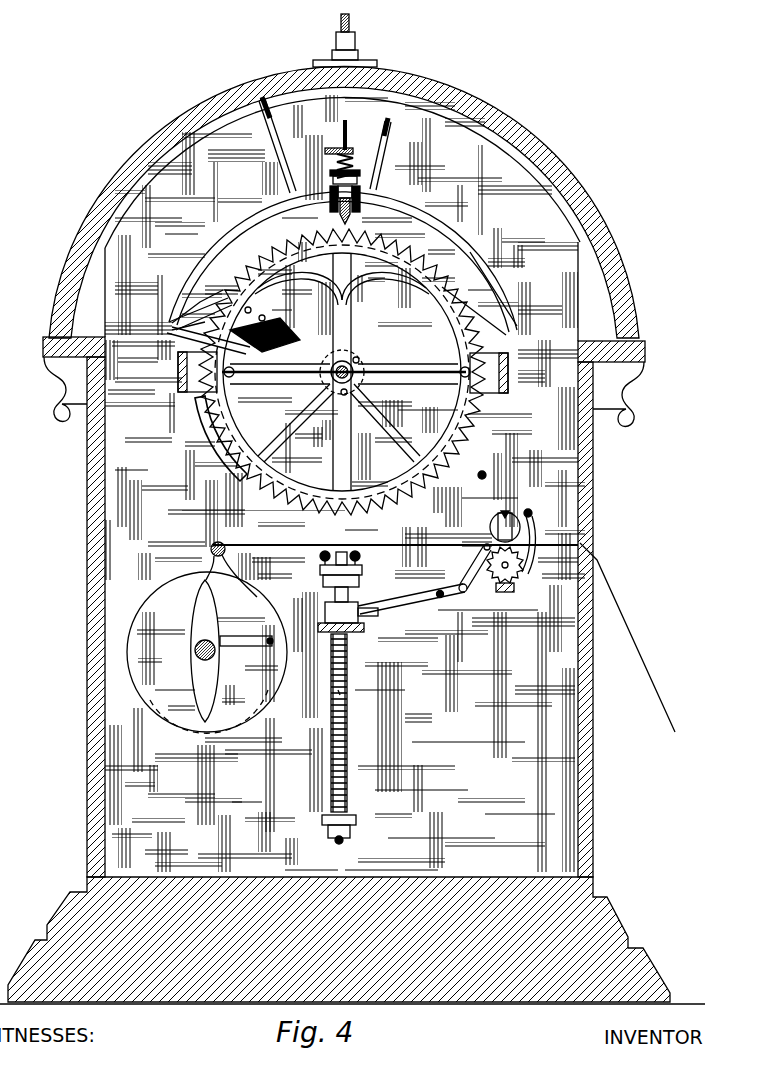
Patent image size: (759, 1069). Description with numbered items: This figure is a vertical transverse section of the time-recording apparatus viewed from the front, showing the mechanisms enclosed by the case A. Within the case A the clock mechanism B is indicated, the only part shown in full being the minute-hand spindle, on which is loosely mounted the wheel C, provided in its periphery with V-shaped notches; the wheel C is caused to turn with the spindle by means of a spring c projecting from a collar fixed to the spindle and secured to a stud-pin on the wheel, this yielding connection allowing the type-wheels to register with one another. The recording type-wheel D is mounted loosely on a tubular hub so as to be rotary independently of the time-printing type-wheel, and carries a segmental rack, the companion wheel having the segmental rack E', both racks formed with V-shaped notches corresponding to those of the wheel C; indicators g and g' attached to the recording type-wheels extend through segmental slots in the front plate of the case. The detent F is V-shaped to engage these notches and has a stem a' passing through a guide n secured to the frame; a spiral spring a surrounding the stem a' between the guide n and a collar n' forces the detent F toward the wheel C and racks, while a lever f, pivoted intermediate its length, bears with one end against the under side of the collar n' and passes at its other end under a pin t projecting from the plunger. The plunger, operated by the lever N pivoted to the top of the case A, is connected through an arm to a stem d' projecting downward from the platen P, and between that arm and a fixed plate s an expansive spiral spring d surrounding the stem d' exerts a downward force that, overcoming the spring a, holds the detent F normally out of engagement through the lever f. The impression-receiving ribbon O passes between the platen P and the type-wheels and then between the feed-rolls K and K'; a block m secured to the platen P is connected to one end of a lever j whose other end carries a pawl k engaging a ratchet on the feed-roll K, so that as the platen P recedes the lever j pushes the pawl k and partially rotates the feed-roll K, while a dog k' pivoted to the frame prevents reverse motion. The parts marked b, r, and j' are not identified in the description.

The case A is at (575, 210).
The lever N is at (350, 18).
The indicator g' is at (271, 145).
The indicator g is at (389, 154).
The stem a' is at (355, 134).
The guide n is at (333, 149).
The spiral spring a is at (352, 166).
The collar n' is at (336, 173).
The lever f is at (357, 182).
The detent F is at (342, 273).
The wheel C is at (342, 372).
The spring c is at (346, 369).
The hub b is at (342, 369).
The clock mechanism B is at (265, 319).
The segmental rack E' is at (197, 341).
The feed-roll K' is at (506, 395).
The recording type-wheel D is at (222, 424).
The impression-receiving ribbon O is at (294, 543).
The platen P is at (342, 552).
The pendulum bob r is at (222, 652).
The pin t is at (362, 572).
The block m is at (341, 612).
The fixed plate s is at (352, 632).
The expansive spiral spring d is at (334, 739).
The stem d' is at (325, 695).
The lever j is at (412, 604).
The lever base j' is at (493, 595).
The dog k' is at (471, 566).
The feed-roll K is at (496, 545).
The pawl k is at (536, 541).